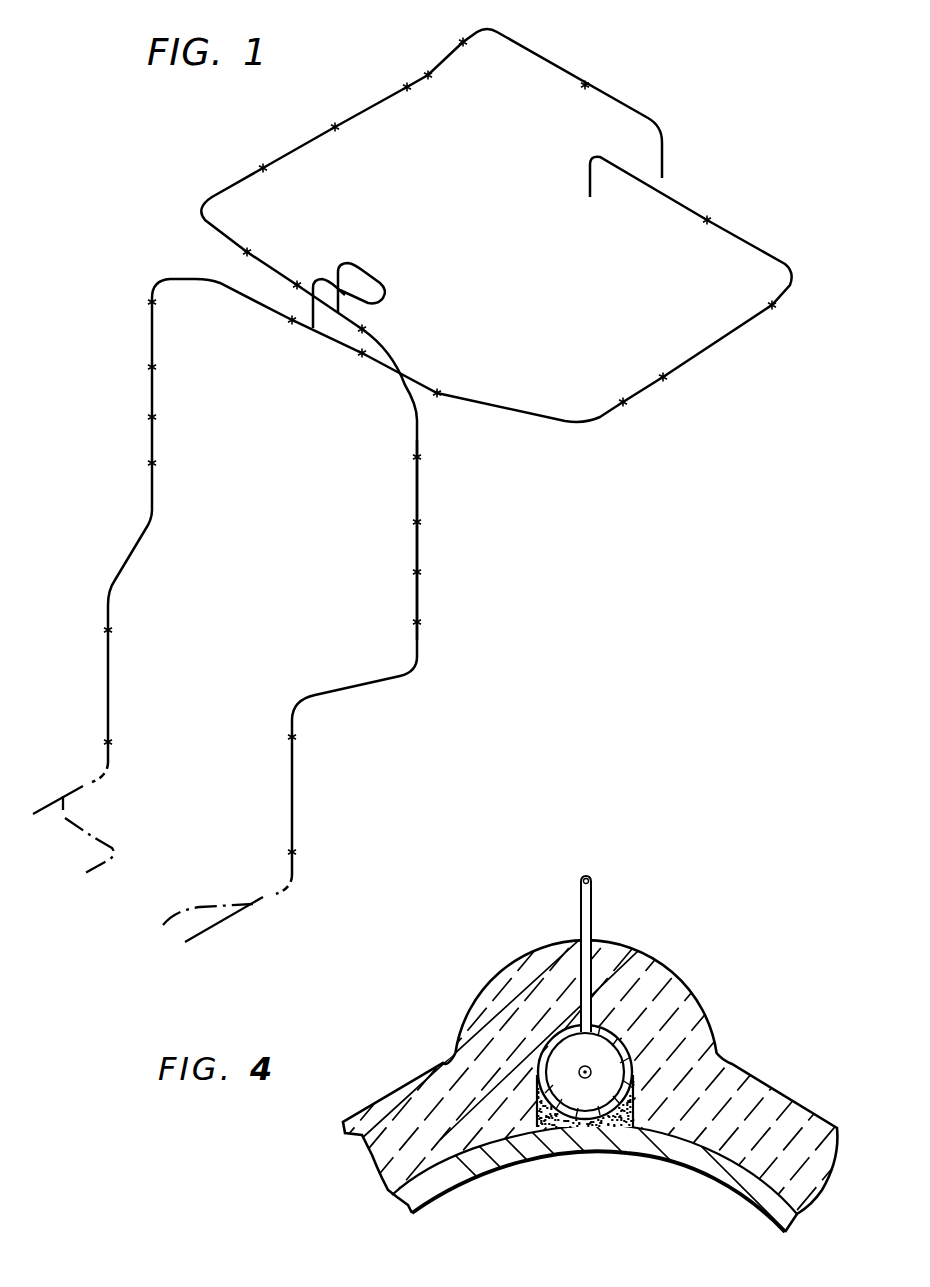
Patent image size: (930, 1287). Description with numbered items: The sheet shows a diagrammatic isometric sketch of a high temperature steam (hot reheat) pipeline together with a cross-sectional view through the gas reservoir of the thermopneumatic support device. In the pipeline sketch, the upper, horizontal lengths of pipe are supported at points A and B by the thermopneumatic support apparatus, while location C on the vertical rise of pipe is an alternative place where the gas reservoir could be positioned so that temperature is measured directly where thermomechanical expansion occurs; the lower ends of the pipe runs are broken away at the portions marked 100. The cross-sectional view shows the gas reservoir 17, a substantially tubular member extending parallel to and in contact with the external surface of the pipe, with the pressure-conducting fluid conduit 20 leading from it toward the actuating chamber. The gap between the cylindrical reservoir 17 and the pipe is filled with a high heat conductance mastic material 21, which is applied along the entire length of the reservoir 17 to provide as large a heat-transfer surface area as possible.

In FIG. 1, the support point A is at (268, 170).
In FIG. 1, the support point B is at (622, 398).
In FIG. 1, the location along vertical rise C is at (415, 545).
In FIG. 1, the wire lead ends 100 is at (85, 788).
In FIG. 4, the gas reservoir 17 is at (542, 1046).
In FIG. 4, the pressure-conducting fluid conduit 20 is at (578, 900).
In FIG. 4, the high heat conductance mastic material 21 is at (653, 1110).